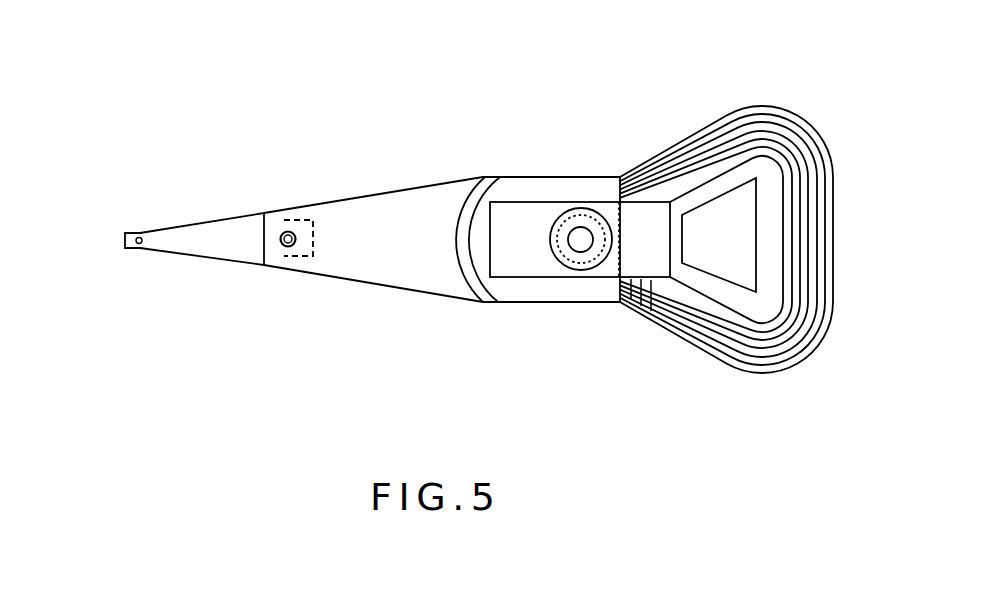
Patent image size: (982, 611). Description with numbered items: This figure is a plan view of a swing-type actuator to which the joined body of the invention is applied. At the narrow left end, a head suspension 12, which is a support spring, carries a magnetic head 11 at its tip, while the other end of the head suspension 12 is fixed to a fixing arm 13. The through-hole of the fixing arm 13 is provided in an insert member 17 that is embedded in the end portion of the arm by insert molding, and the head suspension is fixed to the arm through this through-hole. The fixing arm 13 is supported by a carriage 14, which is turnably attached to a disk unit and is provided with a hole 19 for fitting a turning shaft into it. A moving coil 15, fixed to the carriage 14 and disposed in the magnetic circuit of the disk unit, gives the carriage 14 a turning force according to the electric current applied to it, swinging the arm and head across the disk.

The magnetic head 11 is at (140, 232).
The head suspension 12 is at (198, 222).
The fixing arm 13 is at (390, 192).
The carriage 14 is at (542, 177).
The moving coil 15 is at (795, 123).
The insert member 17 is at (285, 230).
The hole 19 is at (573, 267).